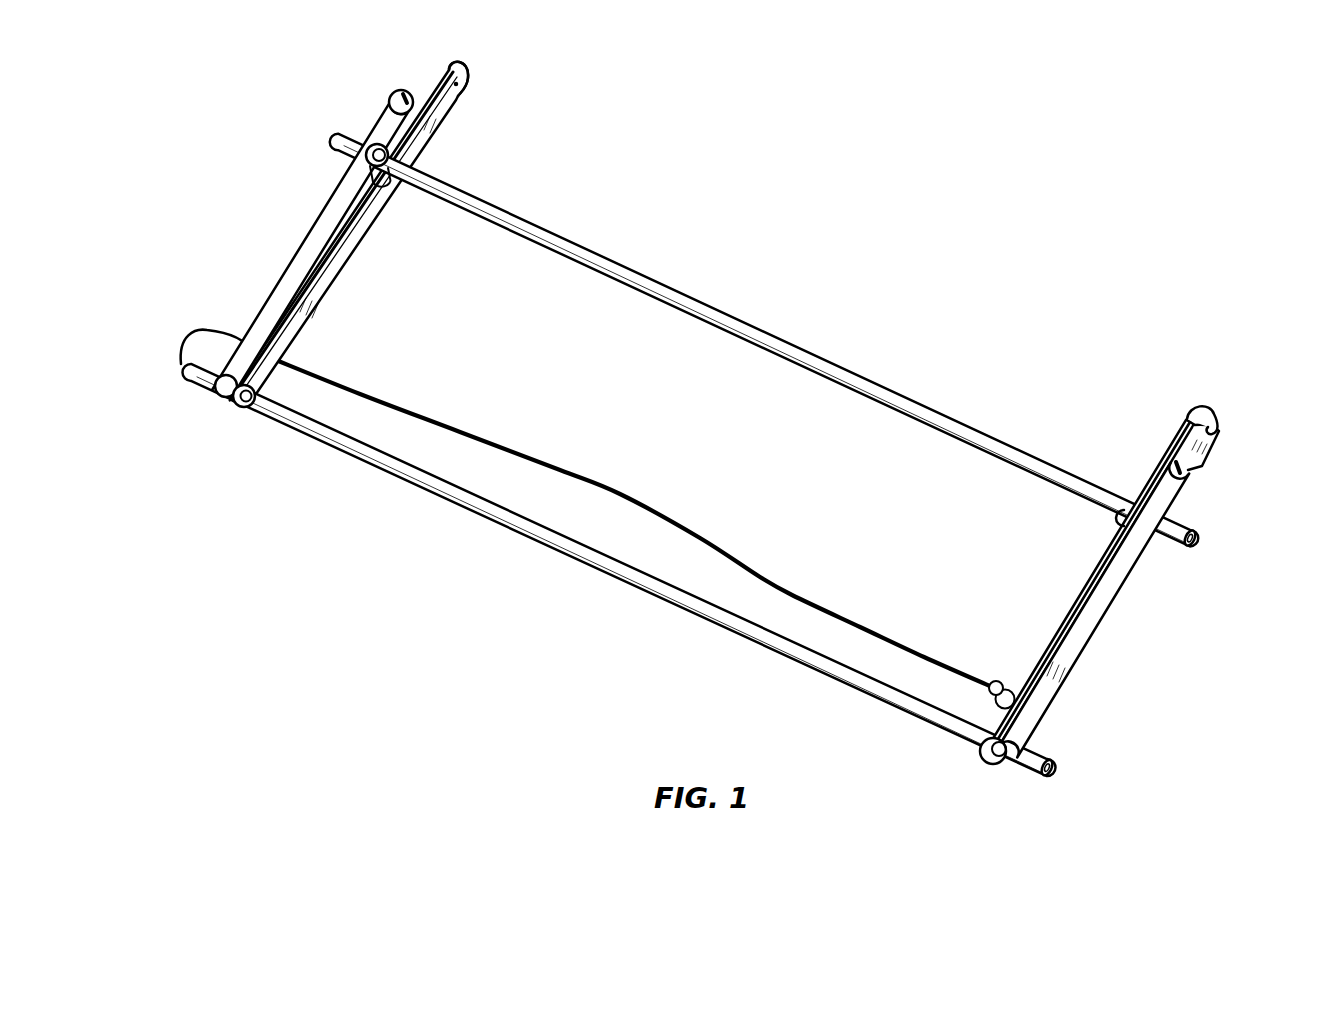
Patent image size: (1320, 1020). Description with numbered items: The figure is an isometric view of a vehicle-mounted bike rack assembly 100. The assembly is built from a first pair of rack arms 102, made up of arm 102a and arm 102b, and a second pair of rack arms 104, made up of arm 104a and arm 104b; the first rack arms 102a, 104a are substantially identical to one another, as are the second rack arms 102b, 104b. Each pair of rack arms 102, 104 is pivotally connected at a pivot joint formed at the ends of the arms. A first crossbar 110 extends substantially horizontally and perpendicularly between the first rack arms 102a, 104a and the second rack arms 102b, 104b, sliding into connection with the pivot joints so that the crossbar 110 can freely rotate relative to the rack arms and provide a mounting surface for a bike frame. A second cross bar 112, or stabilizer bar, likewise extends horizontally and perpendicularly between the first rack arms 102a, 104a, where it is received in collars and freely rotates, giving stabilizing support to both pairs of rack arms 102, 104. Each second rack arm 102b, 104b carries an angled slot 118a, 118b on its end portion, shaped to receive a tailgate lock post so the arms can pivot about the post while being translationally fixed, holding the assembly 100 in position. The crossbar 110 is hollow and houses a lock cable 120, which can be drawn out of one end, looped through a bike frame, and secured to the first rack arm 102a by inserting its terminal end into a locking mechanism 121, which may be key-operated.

The vehicle-mounted bike rack assembly 100 is at (701, 422).
The first pair of rack arms 102 is at (646, 419).
The first rack arm 102a is at (291, 257).
The second rack arm 102b is at (401, 232).
The second pair of rack arms 104 is at (1134, 579).
The first rack arm 104a is at (1085, 623).
The second rack arm 104b is at (1134, 560).
The first crossbar 110 is at (598, 562).
The second cross bar 112 is at (702, 306).
The slot 118a is at (470, 78).
The slot 118b is at (1222, 420).
The lock cable 120 is at (604, 484).
The locking mechanism 121 is at (994, 681).